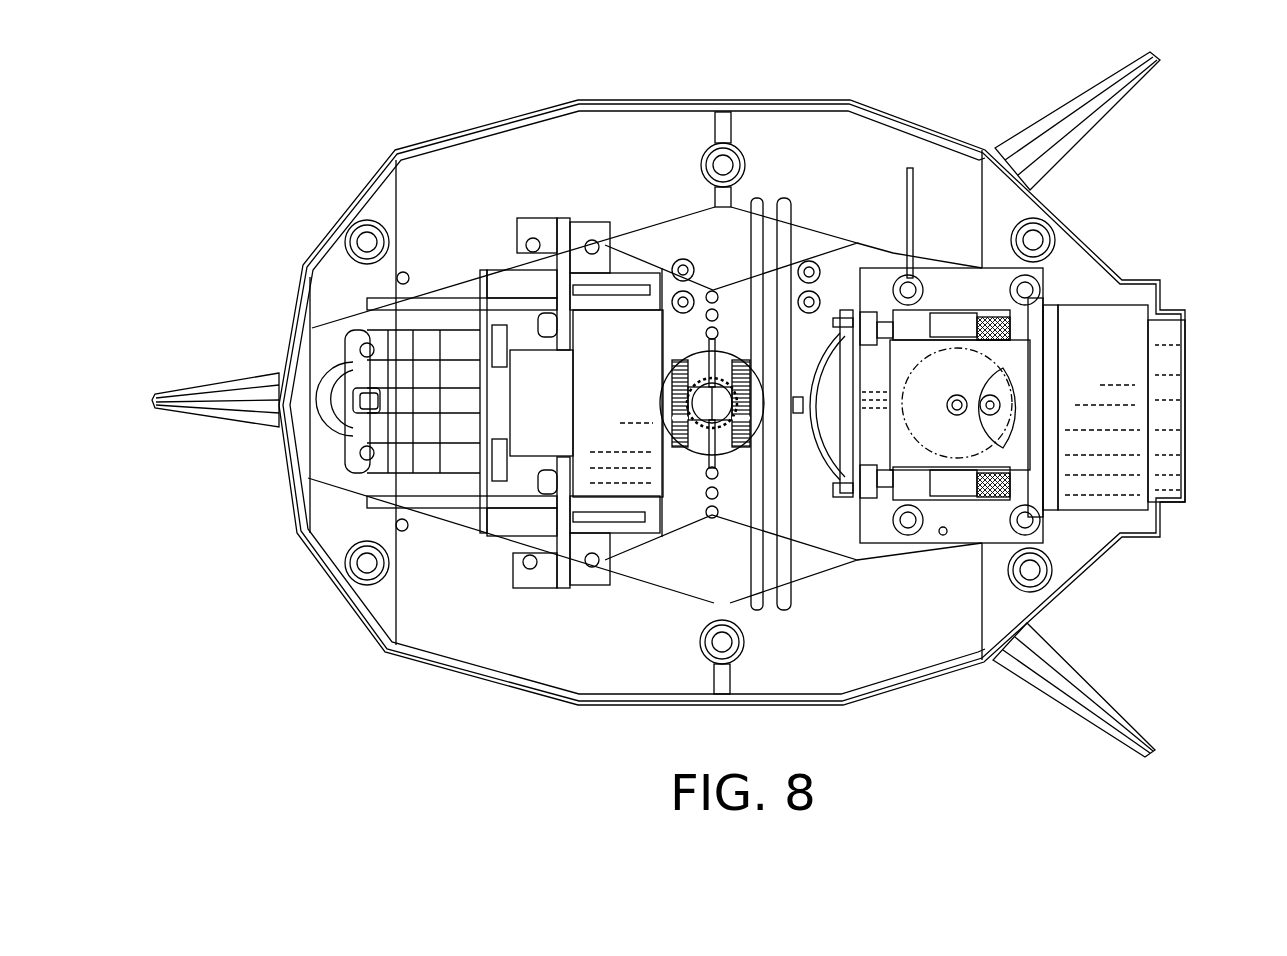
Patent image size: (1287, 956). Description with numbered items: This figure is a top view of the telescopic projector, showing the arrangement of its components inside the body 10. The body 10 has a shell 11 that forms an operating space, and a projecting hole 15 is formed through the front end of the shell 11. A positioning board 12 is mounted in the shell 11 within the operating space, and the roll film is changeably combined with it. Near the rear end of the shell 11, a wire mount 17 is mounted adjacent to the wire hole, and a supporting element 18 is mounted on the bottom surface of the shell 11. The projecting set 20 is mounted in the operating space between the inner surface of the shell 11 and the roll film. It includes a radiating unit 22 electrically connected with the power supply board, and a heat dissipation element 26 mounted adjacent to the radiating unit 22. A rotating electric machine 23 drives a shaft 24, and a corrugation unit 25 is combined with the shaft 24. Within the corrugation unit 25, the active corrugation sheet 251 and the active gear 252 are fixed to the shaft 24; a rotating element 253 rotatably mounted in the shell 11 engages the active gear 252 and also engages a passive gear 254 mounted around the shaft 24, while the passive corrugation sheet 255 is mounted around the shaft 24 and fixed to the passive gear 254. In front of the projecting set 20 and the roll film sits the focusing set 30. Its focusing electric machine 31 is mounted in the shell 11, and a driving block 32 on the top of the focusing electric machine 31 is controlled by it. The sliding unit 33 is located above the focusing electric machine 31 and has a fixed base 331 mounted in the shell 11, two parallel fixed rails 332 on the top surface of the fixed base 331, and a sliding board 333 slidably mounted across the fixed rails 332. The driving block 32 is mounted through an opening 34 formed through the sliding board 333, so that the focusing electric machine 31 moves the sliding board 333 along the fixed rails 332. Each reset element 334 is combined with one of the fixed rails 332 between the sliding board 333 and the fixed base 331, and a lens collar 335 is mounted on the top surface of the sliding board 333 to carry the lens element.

The body 10 is at (527, 698).
The shell 11 is at (457, 670).
The positioning board 12 is at (848, 305).
The projecting hole 15 is at (1175, 313).
The wire mount 17 is at (347, 420).
The supporting element 18 is at (1043, 660).
The projecting set 20 is at (496, 384).
The radiating unit 22 is at (537, 367).
The rotating electric machine 23 is at (623, 333).
The shaft 24 is at (670, 405).
The corrugation unit 25 is at (805, 447).
The heat dissipation element 26 is at (419, 300).
The focusing set 30 is at (887, 257).
The focusing electric machine 31 is at (828, 432).
The driving block 32 is at (988, 398).
The sliding unit 33 is at (1077, 290).
The opening 34 is at (1000, 378).
The active corrugation sheet 251 is at (781, 610).
The active gear 252 is at (678, 357).
The rotating element 253 is at (705, 432).
The passive gear 254 is at (740, 357).
The passive corrugation sheet 255 is at (756, 612).
The fixed base 331 is at (943, 530).
The fixed rails 332 is at (915, 480).
The sliding board 333 is at (910, 275).
The reset elements 334 is at (987, 500).
The lens collar 335 is at (1130, 385).